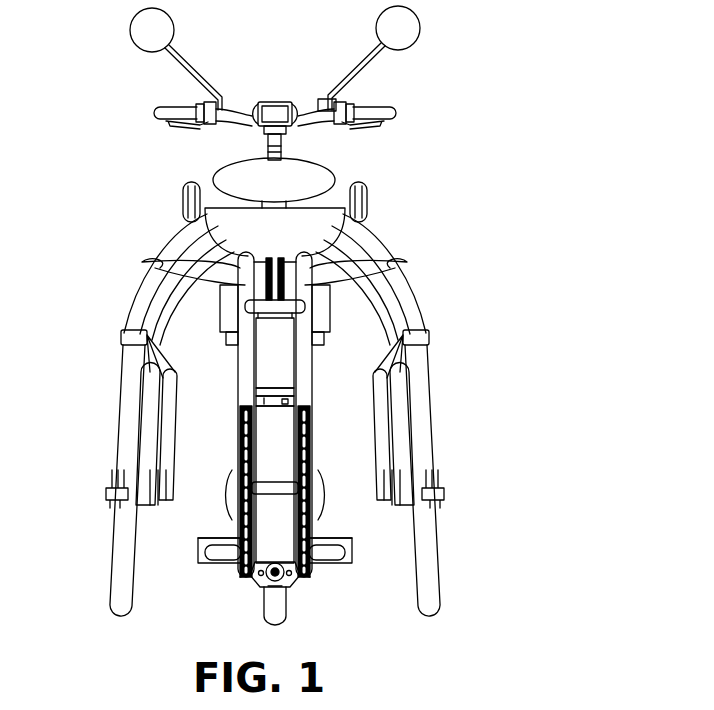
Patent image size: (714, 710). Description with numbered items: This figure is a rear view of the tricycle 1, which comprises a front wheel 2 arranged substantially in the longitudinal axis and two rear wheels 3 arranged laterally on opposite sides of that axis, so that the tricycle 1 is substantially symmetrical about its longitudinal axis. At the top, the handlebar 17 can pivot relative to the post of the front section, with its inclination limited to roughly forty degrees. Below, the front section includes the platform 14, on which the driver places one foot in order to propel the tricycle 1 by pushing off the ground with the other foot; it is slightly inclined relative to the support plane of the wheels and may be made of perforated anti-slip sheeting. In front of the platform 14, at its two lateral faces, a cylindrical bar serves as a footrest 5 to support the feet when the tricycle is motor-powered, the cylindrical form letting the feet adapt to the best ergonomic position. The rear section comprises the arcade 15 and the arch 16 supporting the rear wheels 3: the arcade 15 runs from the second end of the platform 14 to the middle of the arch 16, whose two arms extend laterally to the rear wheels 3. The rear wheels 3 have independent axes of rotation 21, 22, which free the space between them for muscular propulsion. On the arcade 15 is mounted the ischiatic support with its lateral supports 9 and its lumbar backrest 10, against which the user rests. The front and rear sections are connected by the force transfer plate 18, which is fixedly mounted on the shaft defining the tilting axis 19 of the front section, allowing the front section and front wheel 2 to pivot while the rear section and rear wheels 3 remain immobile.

The tricycle 1 is at (478, 144).
The front wheel 2 is at (275, 612).
The rear wheels 3 is at (118, 572).
The footrest 5 is at (207, 538).
The lateral supports 9 is at (185, 200).
The lumbar backrest 10 is at (320, 180).
The platform 14 is at (217, 563).
The arcade 15 is at (237, 382).
The arch 16 is at (412, 297).
The handlebar 17 is at (268, 132).
The force transfer plate 18 is at (290, 575).
The tilting axis 19 is at (257, 580).
The axis of rotation 21 is at (447, 493).
The axis of rotation 22 is at (110, 497).